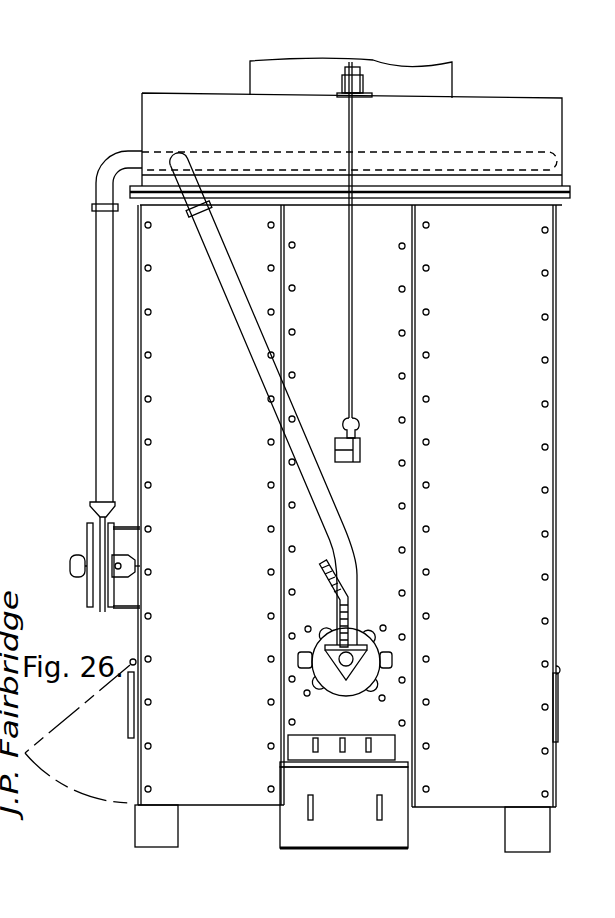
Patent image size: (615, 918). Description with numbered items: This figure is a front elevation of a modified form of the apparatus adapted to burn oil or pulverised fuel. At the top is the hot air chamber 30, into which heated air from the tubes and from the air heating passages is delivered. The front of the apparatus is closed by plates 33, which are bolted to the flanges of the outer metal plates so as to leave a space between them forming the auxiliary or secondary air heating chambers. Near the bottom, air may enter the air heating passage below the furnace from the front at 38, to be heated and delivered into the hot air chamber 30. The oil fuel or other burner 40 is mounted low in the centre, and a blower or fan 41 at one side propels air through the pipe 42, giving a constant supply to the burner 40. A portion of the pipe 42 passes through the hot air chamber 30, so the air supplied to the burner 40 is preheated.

The hot air chamber 30 is at (528, 118).
The plates 33 is at (557, 280).
The front air entry 38 is at (360, 798).
The oil burner 40 is at (366, 654).
The blower or fan 41 is at (88, 592).
The pipe 42 is at (245, 158).